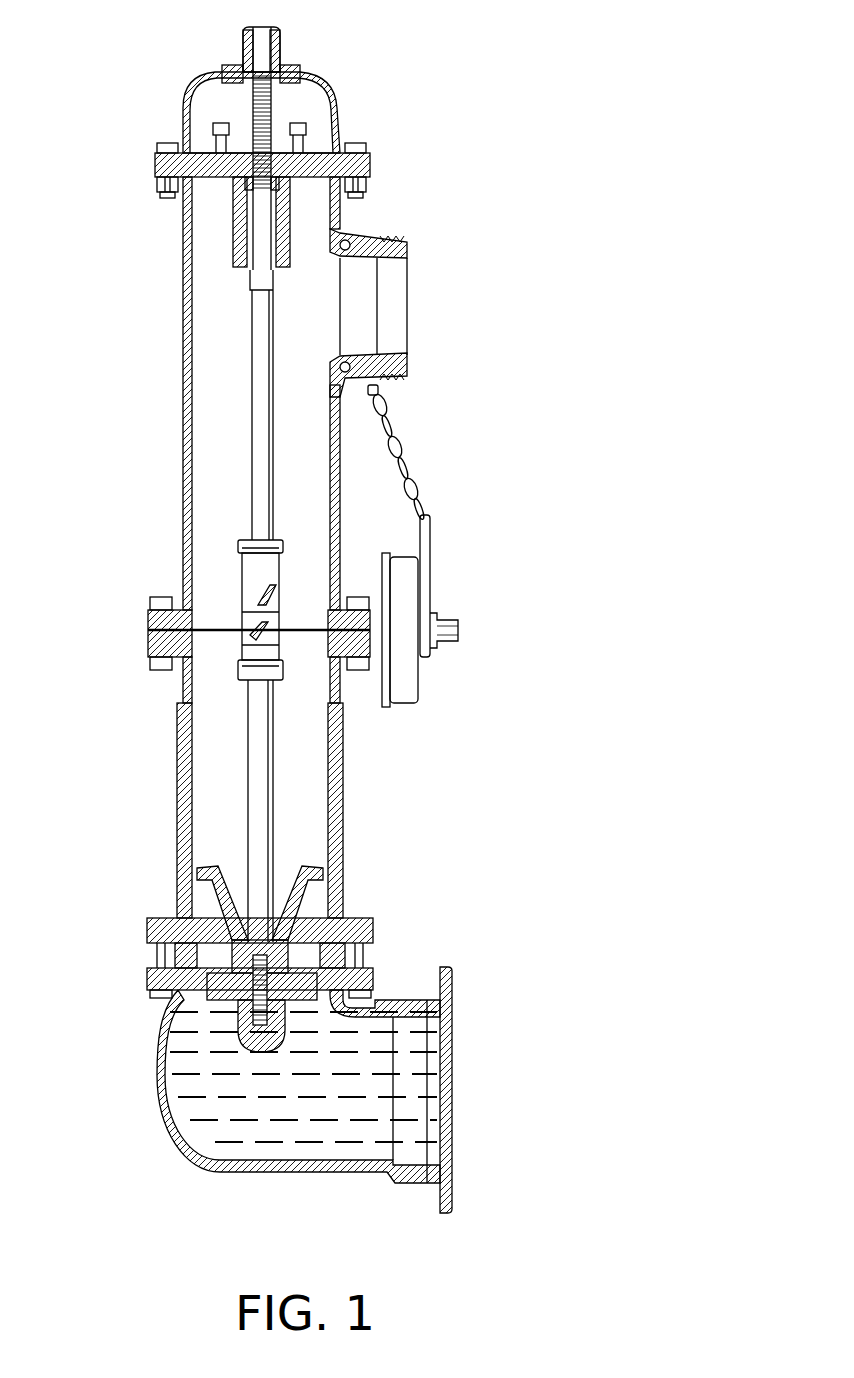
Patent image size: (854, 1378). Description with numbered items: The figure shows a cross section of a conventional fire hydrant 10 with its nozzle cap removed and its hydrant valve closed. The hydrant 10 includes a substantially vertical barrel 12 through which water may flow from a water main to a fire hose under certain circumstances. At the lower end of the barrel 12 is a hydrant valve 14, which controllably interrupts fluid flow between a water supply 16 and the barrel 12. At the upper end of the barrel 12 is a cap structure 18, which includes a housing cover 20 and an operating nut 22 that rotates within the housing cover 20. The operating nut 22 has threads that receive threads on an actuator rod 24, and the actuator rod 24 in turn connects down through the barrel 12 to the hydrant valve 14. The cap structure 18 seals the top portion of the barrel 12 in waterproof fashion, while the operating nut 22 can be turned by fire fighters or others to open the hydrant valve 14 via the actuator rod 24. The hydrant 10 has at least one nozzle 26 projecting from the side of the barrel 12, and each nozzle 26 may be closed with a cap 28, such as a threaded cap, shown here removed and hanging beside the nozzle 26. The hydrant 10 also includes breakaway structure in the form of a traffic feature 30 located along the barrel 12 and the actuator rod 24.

The fire hydrant 10 is at (418, 91).
The barrel 12 is at (183, 352).
The hydrant valve 14 is at (312, 918).
The water supply 16 is at (556, 1091).
The cap structure 18 is at (340, 90).
The housing cover 20 is at (362, 165).
The operating nut 22 is at (281, 48).
The actuator rod 24 is at (260, 418).
The nozzle 26 is at (408, 256).
The cap 28 is at (450, 627).
The traffic feature 30 is at (150, 630).